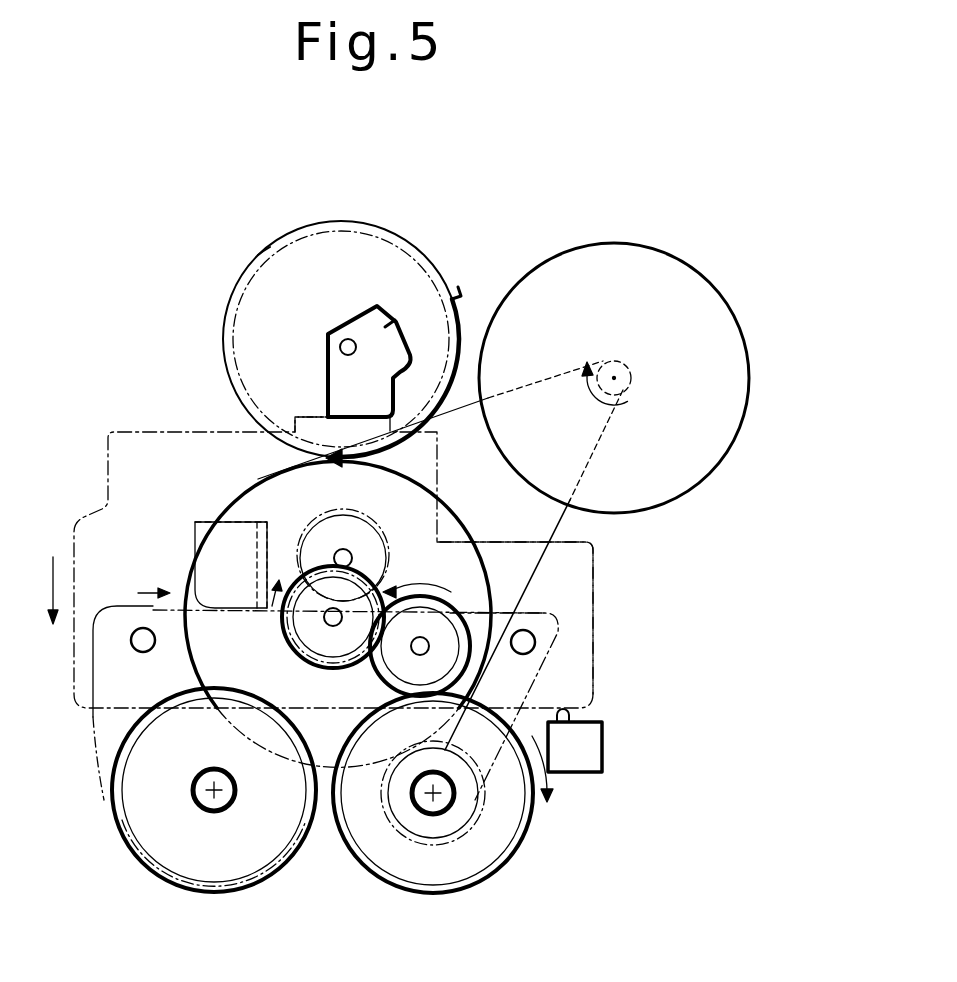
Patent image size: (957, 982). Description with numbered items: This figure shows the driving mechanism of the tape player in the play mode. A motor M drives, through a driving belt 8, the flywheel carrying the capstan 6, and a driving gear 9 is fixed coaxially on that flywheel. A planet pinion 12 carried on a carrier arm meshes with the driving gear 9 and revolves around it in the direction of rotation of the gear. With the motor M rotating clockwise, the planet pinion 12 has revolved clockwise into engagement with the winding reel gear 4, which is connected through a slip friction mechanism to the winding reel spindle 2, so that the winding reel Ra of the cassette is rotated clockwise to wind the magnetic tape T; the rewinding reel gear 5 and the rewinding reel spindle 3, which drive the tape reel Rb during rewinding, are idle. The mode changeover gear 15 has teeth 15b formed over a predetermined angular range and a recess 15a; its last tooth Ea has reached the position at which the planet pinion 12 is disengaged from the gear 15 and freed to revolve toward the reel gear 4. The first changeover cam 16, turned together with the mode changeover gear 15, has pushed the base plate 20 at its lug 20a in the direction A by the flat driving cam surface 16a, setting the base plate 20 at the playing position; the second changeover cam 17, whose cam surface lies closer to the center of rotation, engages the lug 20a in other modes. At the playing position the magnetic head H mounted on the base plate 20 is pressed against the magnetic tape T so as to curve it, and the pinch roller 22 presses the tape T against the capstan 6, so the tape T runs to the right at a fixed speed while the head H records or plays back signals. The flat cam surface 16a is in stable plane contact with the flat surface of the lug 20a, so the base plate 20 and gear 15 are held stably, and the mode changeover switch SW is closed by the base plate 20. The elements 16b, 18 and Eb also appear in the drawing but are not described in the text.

The winding reel spindle 2 is at (418, 803).
The rewinding reel spindle 3 is at (203, 797).
The winding reel gear 4 is at (506, 872).
The rewinding reel gear 5 is at (143, 872).
The capstan 6 is at (333, 617).
The driving belt 8 is at (556, 530).
The driving gear 9 is at (366, 579).
The planet pinion 12 is at (450, 600).
The mode changeover gear 15 is at (433, 256).
The recess 15a is at (446, 393).
The teeth 15b is at (258, 255).
The first changeover cam 16 is at (330, 373).
The driving cam surface 16a is at (262, 460).
The pivot hole 16b is at (326, 338).
The second changeover cam 17 is at (530, 643).
The guide pin 18 is at (138, 652).
The base plate 20 is at (598, 610).
The lug 20a is at (298, 412).
The pinch roller 22 is at (333, 518).
The motor M is at (622, 272).
The last tooth Ea is at (342, 465).
The notch Eb is at (463, 300).
The magnetic head H is at (195, 540).
The magnetic tape T is at (333, 608).
The direction A is at (46, 609).
The mode changeover switch SW is at (572, 773).
The winding reel Ra is at (433, 845).
The tape reel Rb is at (283, 882).